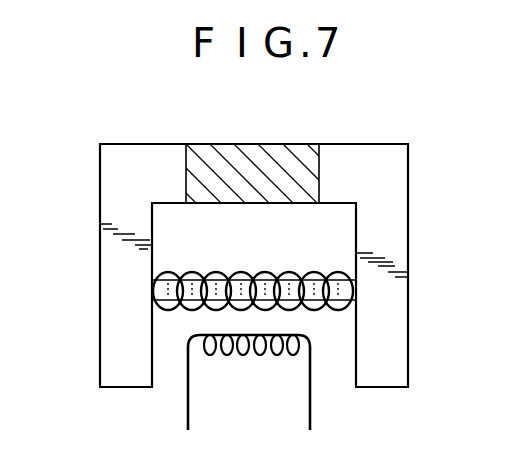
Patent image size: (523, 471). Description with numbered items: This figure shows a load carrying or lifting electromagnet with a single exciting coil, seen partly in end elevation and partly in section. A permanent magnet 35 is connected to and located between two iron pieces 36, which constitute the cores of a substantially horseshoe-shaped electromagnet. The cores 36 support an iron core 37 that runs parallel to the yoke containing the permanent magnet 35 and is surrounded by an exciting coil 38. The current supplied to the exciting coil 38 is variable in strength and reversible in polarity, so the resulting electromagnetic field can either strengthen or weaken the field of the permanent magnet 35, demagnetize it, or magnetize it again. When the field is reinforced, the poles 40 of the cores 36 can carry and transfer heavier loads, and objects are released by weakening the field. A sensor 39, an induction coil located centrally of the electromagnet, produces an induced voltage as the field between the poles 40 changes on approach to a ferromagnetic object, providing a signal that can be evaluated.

The permanent magnet 35 is at (253, 155).
The iron pieces 36 is at (108, 243).
The iron core 37 is at (226, 286).
The exciting coil 38 is at (275, 272).
The sensor 39 is at (222, 355).
The poles 40 is at (140, 387).